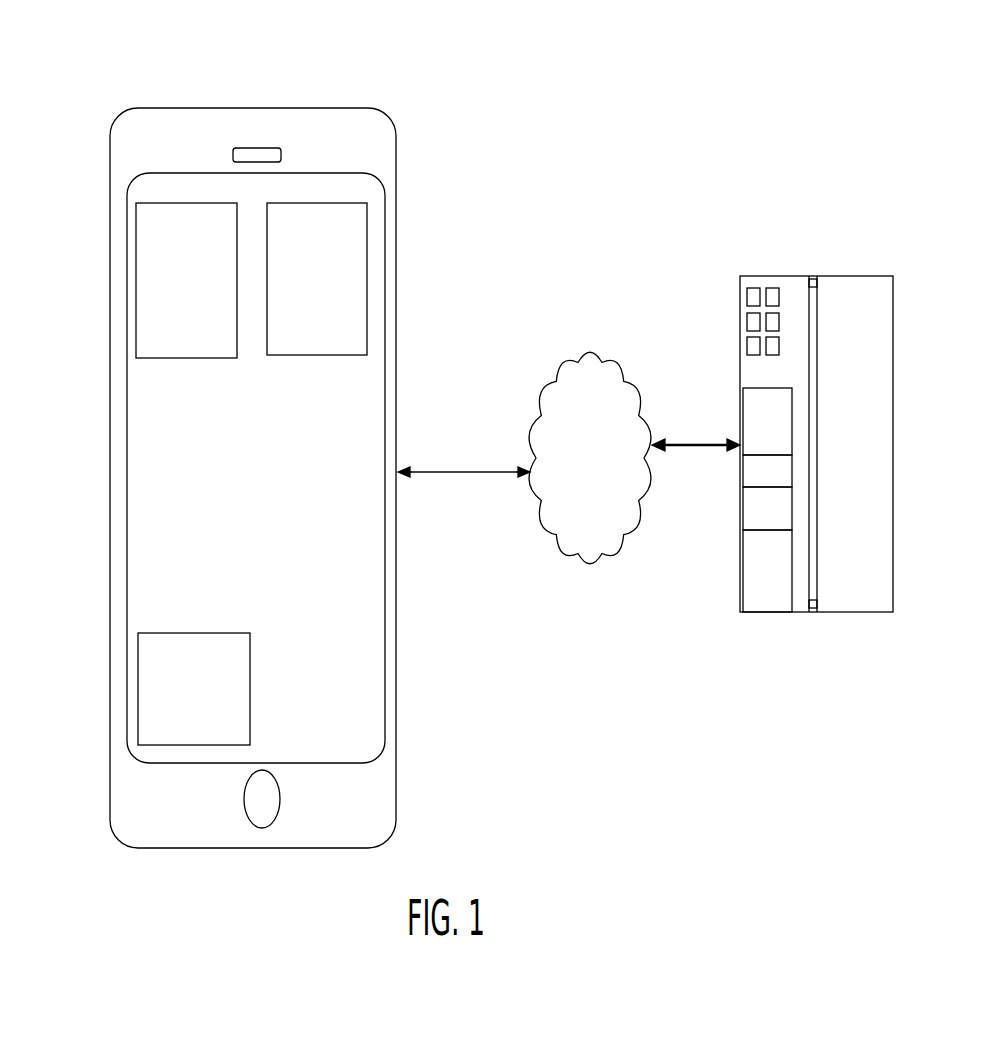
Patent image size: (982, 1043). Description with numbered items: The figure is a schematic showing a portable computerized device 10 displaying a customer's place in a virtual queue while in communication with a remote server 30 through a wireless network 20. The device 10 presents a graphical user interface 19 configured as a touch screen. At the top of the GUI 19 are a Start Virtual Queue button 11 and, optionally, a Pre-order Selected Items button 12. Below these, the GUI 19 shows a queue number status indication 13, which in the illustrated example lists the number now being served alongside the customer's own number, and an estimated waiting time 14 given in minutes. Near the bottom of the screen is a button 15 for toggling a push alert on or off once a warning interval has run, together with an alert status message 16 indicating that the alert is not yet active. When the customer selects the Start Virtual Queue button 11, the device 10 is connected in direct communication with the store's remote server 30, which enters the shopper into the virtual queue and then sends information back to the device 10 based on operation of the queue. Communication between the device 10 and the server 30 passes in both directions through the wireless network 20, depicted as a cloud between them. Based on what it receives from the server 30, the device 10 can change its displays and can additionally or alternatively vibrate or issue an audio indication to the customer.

The portable computerized device 10 is at (232, 108).
The graphical user interface 19 is at (370, 168).
The Start Virtual Queue button 11 is at (136, 280).
The Pre-order Selected Items button 12 is at (367, 278).
The queue number status indication 13 is at (170, 463).
The estimated waiting time 14 is at (170, 573).
The push alert toggle button 15 is at (138, 690).
The alert status message 16 is at (379, 688).
The wireless network 20 is at (565, 350).
The server 30 is at (742, 323).